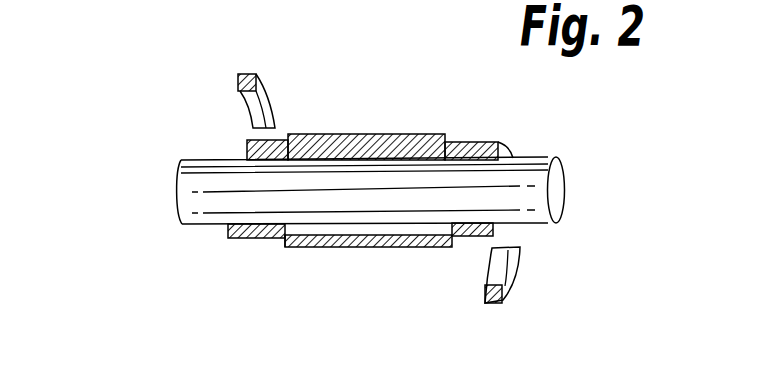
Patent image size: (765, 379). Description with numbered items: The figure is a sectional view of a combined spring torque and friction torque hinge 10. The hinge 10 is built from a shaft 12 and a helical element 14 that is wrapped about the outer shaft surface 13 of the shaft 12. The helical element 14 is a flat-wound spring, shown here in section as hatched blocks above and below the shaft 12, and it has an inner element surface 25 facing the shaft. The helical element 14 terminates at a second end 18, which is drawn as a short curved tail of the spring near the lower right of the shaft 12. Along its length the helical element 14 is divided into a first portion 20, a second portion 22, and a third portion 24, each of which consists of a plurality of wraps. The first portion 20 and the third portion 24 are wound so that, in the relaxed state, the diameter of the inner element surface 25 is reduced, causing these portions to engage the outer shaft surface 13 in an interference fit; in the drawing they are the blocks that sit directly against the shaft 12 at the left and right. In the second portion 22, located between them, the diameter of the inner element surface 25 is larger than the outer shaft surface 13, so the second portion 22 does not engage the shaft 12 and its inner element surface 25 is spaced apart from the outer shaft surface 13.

The combined spring torque and friction torque hinge 10 is at (152, 193).
The shaft 12 is at (562, 189).
The outer shaft surface 13 is at (190, 187).
The helical element 14 is at (367, 128).
The second end 18 is at (497, 304).
The first portion 20 is at (258, 240).
The second portion 22 is at (375, 249).
The third portion 24 is at (470, 239).
The inner element surface 25 is at (300, 249).